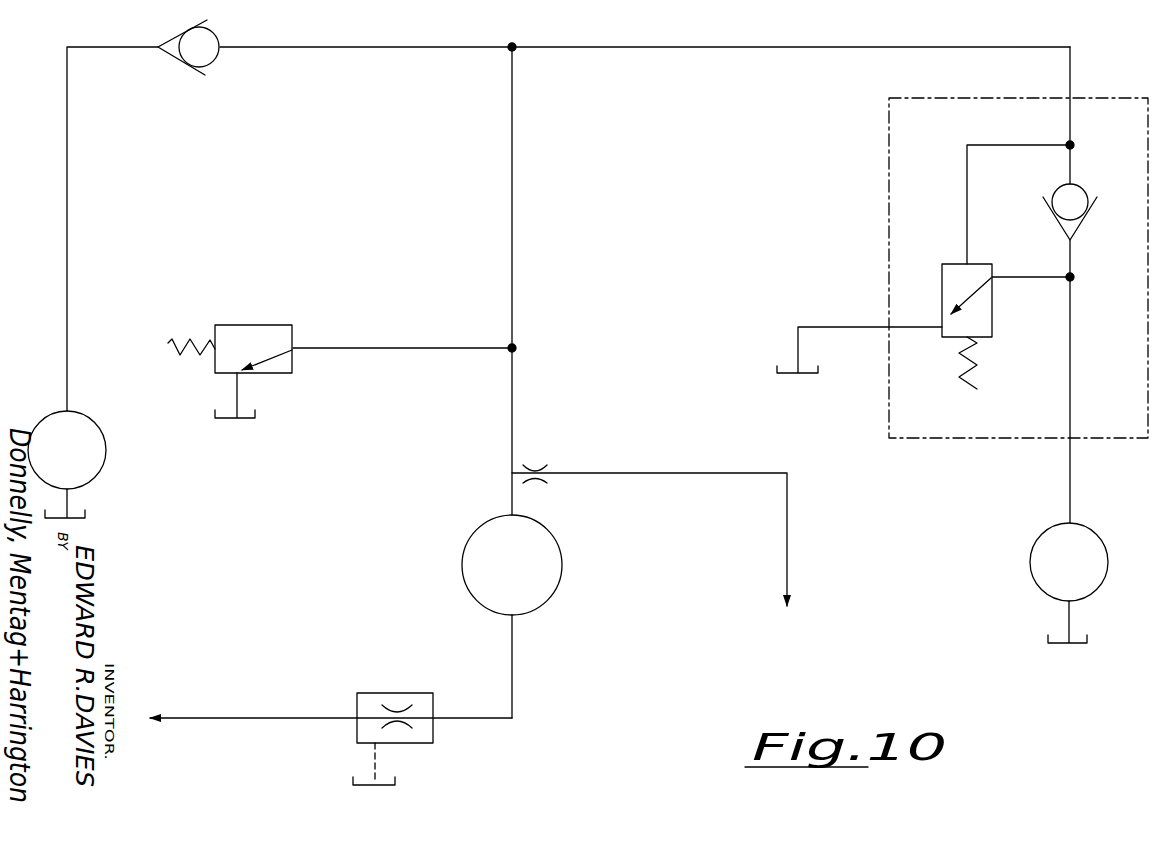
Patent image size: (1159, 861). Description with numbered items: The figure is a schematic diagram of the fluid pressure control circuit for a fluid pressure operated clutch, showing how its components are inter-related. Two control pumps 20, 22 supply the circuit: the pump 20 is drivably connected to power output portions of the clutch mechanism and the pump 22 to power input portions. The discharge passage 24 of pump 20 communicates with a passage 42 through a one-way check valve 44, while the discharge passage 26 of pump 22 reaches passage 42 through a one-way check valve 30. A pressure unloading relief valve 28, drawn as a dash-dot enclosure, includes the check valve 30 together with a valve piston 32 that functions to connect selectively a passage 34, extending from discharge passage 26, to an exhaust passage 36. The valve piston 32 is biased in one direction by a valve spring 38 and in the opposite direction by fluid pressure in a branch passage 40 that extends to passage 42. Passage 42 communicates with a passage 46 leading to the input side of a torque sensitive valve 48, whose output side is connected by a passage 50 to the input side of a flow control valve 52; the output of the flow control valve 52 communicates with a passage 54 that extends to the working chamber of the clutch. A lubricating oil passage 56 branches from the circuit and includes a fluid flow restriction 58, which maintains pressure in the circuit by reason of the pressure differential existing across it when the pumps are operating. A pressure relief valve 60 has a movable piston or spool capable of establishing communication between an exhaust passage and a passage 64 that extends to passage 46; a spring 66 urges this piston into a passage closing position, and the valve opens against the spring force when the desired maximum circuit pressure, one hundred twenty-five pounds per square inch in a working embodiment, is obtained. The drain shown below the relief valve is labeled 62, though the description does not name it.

The control pump 20 is at (105, 453).
The control pump 22 is at (1030, 557).
The discharge passage 24 is at (67, 178).
The discharge passage 26 is at (1070, 480).
The pressure unloading relief valve 28 is at (1110, 92).
The one-way check valve 30 is at (1072, 195).
The valve piston 32 is at (978, 310).
The passage 34 is at (1041, 277).
The exhaust passage 36 is at (848, 327).
The valve spring 38 is at (968, 388).
The branch passage 40 is at (967, 202).
The passage 42 is at (872, 47).
The one-way check valve 44 is at (207, 42).
The passage 46 is at (512, 378).
The torque sensitive valve 48 is at (570, 556).
The passage 50 is at (512, 655).
The flow control valve 52 is at (436, 733).
The passage 54 is at (250, 717).
The lubricating oil passage 56 is at (693, 472).
The fluid flow restriction 58 is at (537, 468).
The pressure relief valve 60 is at (290, 364).
The drain 62 is at (237, 390).
The passage 64 is at (416, 346).
The spring 66 is at (168, 343).